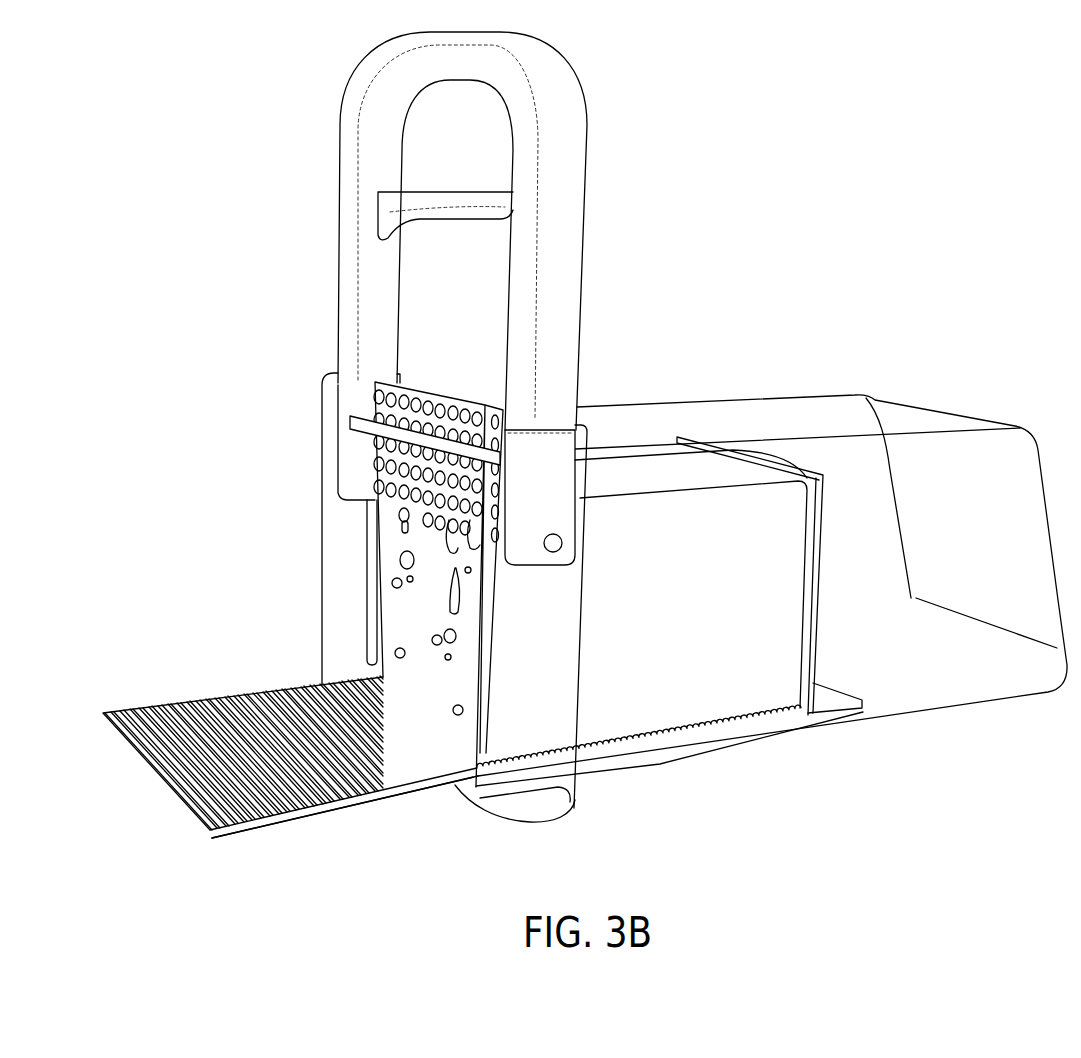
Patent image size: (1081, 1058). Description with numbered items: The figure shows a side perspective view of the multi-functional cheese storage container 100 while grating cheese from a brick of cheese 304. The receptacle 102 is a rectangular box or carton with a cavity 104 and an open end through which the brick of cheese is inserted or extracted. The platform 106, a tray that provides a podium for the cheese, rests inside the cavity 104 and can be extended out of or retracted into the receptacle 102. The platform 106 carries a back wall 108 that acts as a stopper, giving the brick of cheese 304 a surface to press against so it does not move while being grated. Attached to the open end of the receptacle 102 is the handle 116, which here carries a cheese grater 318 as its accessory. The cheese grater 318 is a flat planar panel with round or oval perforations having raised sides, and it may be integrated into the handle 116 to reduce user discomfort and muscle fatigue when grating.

The multi-functional cheese storage container 100 is at (990, 290).
The receptacle 102 is at (770, 393).
The cavity 104 is at (881, 584).
The platform 106 is at (215, 712).
The back wall 108 is at (814, 547).
The handle 116 is at (568, 247).
The brick of cheese 304 is at (385, 632).
The cheese grater 318 is at (377, 416).